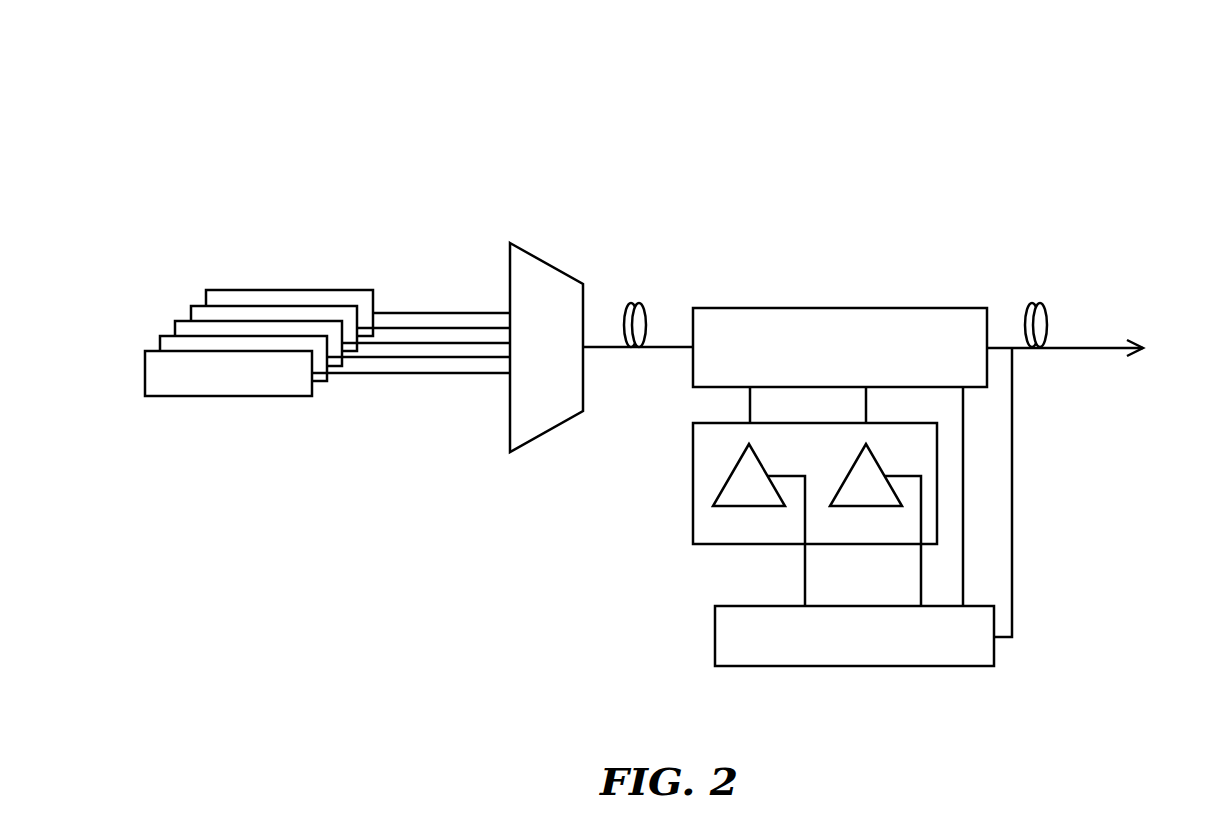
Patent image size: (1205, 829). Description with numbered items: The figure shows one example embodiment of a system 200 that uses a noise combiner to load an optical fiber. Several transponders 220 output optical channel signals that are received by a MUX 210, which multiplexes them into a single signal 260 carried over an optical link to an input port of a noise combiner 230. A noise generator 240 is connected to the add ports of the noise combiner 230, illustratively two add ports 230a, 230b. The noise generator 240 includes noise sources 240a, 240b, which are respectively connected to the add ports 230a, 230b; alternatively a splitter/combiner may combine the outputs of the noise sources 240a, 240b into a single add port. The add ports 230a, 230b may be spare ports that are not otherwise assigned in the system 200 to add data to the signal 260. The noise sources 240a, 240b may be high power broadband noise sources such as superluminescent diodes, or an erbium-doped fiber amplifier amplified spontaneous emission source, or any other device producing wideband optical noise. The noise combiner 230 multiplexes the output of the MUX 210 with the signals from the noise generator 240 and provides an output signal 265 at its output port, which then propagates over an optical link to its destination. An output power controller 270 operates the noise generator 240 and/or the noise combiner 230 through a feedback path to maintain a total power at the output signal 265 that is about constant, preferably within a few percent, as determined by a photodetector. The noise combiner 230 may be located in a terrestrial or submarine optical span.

The system 200 is at (207, 118).
The MUX 210 is at (551, 264).
The transponders 220 is at (207, 290).
The noise combiner 230 is at (843, 307).
The add port 230a is at (750, 401).
The add port 230b is at (866, 401).
The noise generator 240 is at (775, 508).
The noise source 240a is at (749, 508).
The noise source 240b is at (866, 508).
The signal 260 is at (655, 351).
The output signal 265 is at (1089, 352).
The output power controller 270 is at (863, 507).